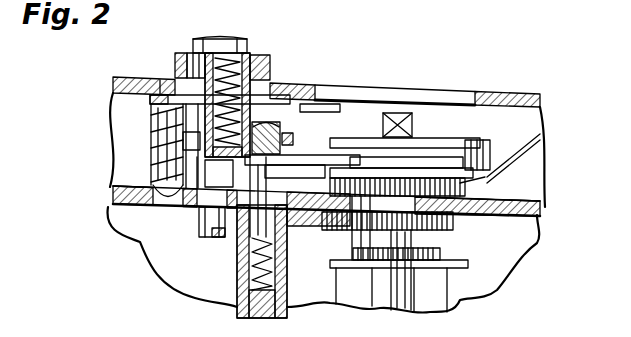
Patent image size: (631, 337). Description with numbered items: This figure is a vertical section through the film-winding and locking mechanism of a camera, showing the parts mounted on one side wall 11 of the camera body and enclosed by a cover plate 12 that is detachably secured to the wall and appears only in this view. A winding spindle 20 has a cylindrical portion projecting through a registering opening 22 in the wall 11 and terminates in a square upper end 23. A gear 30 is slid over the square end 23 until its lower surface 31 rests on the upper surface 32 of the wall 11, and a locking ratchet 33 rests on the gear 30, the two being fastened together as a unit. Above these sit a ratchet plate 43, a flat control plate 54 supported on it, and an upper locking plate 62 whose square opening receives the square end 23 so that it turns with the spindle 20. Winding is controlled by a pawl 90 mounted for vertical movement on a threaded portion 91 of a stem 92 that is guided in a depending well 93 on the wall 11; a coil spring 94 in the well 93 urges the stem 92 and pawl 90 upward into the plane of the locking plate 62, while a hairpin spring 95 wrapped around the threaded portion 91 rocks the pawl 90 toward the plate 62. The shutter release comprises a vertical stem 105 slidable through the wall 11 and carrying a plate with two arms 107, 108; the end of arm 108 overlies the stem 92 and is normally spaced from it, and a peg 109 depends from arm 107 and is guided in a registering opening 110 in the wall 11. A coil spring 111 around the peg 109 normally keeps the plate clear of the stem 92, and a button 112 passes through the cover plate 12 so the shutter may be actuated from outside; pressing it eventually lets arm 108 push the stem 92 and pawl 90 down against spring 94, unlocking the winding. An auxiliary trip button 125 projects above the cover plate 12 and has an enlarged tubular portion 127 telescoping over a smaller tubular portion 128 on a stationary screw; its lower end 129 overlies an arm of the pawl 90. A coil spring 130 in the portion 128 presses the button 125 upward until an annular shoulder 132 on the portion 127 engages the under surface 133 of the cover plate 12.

The side wall 11 is at (545, 214).
The cover plate 12 is at (505, 96).
The winding axle or spindle 20 is at (402, 293).
The registering opening 22 is at (437, 230).
The square upper end 23 is at (412, 128).
The cog wheel or gear 30 is at (346, 214).
The lower surface of gear 31 is at (362, 215).
The upper surface of wall 32 is at (493, 201).
The locking wheel or ratchet 33 is at (485, 175).
The ratchet plate 43 is at (500, 160).
The control plate 54 is at (500, 150).
The upper ratchet or locking plate 62 is at (492, 145).
The pawl 90 is at (262, 156).
The threaded portion 91 is at (280, 130).
The stem 92 is at (272, 215).
The well or container 93 is at (243, 247).
The coil spring 94 is at (275, 262).
The hairpin spring 95 is at (392, 108).
The vertical stem 105 is at (199, 219).
The arm 107 is at (172, 78).
The arm 108 is at (270, 80).
The peg 109 is at (153, 170).
The registering opening 110 is at (118, 198).
The coil spring 111 is at (152, 150).
The button 112 is at (210, 38).
The trip button 125 is at (232, 55).
The enlarged tubular portion 127 is at (345, 105).
The smaller tubular portion 128 is at (215, 173).
The lower end 129 is at (152, 118).
The coil spring 130 is at (250, 72).
The annular shoulder 132 is at (178, 80).
The under surface 133 is at (340, 100).